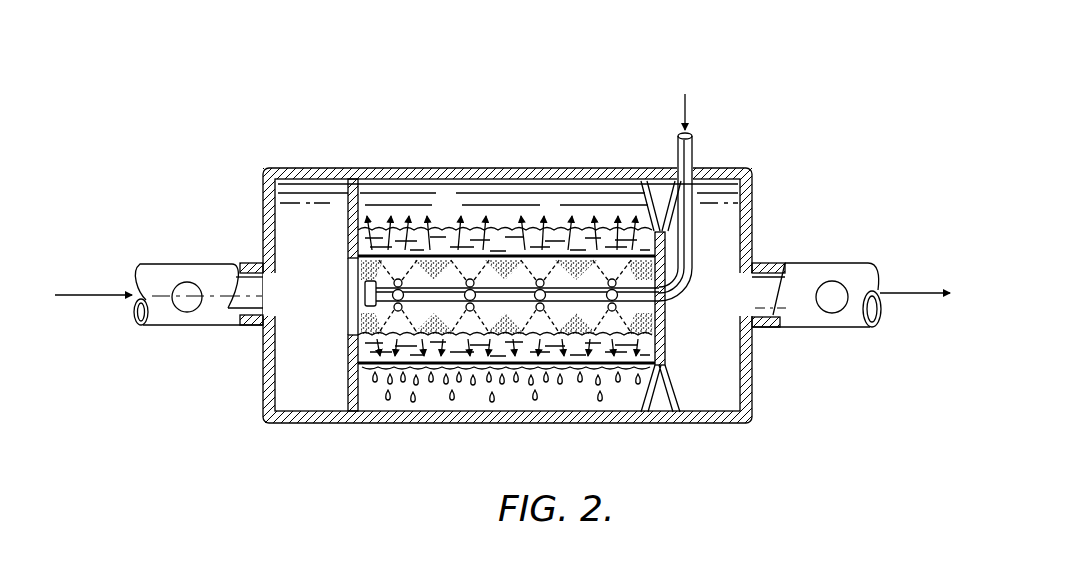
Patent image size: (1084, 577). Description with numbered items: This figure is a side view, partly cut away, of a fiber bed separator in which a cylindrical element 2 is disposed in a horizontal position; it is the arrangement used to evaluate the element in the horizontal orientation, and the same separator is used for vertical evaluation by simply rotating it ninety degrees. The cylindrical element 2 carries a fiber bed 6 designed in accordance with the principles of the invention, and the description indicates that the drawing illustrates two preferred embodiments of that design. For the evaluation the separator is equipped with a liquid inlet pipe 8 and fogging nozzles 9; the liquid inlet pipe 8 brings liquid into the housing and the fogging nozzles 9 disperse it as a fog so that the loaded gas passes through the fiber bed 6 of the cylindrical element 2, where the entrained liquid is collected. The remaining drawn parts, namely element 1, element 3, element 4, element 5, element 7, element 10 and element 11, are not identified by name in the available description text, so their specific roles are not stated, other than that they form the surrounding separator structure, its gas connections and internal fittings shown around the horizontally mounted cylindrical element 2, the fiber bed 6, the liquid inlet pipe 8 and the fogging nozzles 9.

The housing 1 is at (455, 169).
The cylindrical element 2 is at (503, 228).
The inlet chamber 3 is at (347, 208).
The gas inlet pipe 4 is at (211, 263).
The partition wall 5 is at (667, 322).
The fiber bed 6 is at (429, 250).
The gas outlet pipe 7 is at (810, 263).
The liquid inlet pipe 8 is at (677, 146).
The fogging nozzles 9 is at (465, 302).
The inlet valve 10 is at (186, 282).
The outlet valve 11 is at (828, 281).